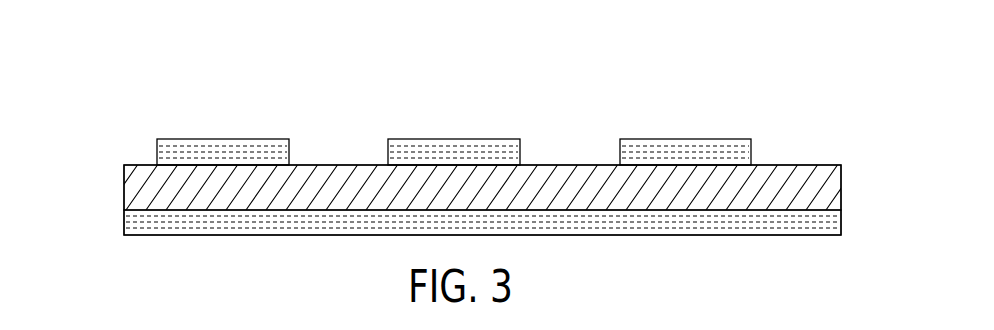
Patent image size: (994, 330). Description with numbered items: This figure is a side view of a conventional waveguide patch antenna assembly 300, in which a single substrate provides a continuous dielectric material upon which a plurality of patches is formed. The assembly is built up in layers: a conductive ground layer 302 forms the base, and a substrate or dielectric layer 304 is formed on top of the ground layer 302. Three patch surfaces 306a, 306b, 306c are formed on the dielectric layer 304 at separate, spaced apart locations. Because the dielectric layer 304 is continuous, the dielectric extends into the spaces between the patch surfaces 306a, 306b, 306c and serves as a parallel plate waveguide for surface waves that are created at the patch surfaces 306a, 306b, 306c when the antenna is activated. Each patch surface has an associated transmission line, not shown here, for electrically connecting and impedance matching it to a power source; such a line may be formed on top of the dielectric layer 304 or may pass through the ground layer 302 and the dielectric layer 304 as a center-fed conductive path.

The waveguide patch antenna assembly 300 is at (96, 125).
The conductive ground layer 302 is at (822, 220).
The dielectric layer 304 is at (822, 192).
The patch surface 306a is at (228, 139).
The patch surface 306b is at (445, 139).
The patch surface 306c is at (681, 139).